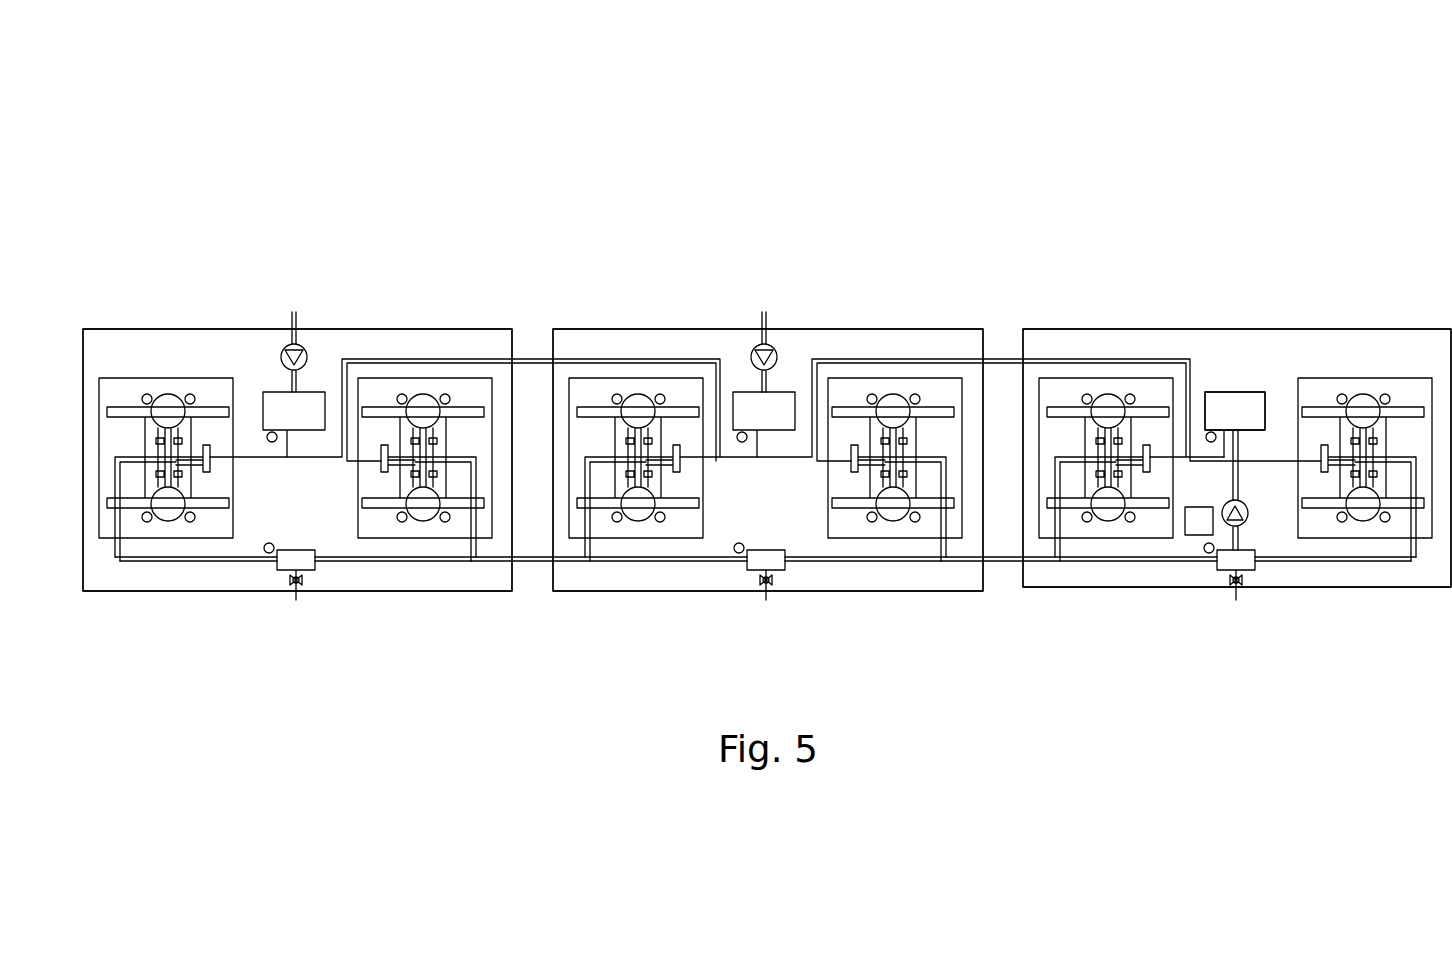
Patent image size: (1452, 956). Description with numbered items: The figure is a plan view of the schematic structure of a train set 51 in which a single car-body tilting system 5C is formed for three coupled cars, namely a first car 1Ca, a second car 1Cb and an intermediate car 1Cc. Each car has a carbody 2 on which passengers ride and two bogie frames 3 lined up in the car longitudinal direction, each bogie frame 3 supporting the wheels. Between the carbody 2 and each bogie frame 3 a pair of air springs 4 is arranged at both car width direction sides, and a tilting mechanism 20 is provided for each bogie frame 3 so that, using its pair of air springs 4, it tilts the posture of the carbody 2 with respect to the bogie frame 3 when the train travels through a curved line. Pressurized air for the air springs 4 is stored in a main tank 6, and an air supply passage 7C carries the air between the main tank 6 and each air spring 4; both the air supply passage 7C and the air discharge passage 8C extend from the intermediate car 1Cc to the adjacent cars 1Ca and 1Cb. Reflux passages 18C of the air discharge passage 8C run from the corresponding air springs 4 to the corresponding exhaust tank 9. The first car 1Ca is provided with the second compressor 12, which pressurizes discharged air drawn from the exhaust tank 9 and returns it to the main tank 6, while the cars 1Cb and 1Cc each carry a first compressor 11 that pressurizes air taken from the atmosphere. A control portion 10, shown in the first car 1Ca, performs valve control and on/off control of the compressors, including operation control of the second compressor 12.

The train set 51 is at (768, 133).
The first car 1Ca is at (1248, 322).
The second car 1Cb is at (420, 322).
The intermediate car 1Cc is at (890, 322).
The carbody 2 is at (200, 340).
The bogie frame 3 is at (118, 409).
The air spring 4 is at (166, 400).
The car-body tilting system 5C is at (1237, 441).
The main tank 6 is at (270, 394).
The air supply passage 7C is at (1048, 352).
The air discharge passage 8C is at (672, 567).
The exhaust tank 9 is at (312, 572).
The control portion 10 is at (1190, 532).
The first compressor 11 is at (308, 357).
The second compressor 12 is at (1248, 516).
The reflux passage 18C is at (203, 562).
The tilting mechanism 20 is at (228, 486).